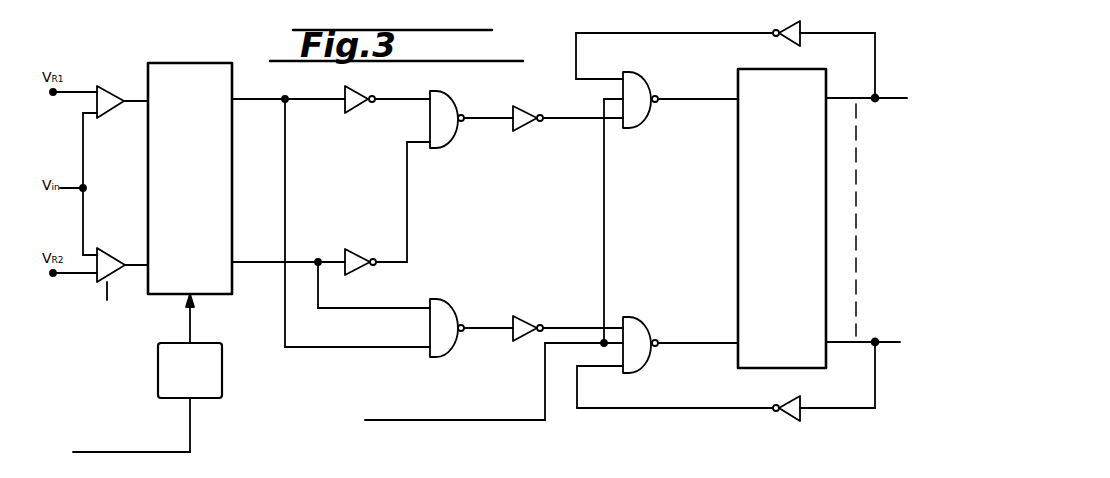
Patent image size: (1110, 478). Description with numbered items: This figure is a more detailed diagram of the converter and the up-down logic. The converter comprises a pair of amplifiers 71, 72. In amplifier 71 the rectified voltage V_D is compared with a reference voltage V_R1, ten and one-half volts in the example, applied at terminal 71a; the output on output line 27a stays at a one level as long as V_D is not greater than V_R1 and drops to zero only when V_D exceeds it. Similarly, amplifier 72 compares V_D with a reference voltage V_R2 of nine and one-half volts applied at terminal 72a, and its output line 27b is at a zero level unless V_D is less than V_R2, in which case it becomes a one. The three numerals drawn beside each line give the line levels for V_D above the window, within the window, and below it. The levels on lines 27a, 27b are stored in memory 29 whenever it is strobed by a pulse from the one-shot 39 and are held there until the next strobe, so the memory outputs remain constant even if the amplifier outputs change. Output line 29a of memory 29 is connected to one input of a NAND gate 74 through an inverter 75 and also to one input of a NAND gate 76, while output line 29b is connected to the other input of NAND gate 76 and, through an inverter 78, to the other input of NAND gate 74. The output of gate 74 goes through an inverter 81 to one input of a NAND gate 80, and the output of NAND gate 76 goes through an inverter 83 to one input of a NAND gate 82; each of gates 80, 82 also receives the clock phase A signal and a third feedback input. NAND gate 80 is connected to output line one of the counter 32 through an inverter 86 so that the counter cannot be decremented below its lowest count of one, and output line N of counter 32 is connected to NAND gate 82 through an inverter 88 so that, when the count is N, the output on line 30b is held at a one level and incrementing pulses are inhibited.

The memory 29 is at (207, 63).
The output line of memory 29a is at (263, 104).
The output line of memory 29b is at (250, 267).
The one-shot 39 is at (208, 343).
The amplifier 71 is at (102, 112).
The terminal 71a is at (84, 90).
The output line 27a is at (136, 103).
The amplifier 72 is at (109, 281).
The terminal 72a is at (75, 276).
The output line 27b is at (138, 268).
The NAND gate 74 is at (455, 100).
The inverter 75 is at (352, 114).
The NAND gate 76 is at (447, 308).
The inverter 78 is at (353, 240).
The NAND gate 80 is at (633, 128).
The inverter 81 is at (521, 132).
The NAND gate 82 is at (645, 306).
The inverter 83 is at (515, 313).
The inverter 86 is at (782, 27).
The inverter 88 is at (792, 422).
The counter 32 is at (738, 199).
The output line 30b is at (680, 346).